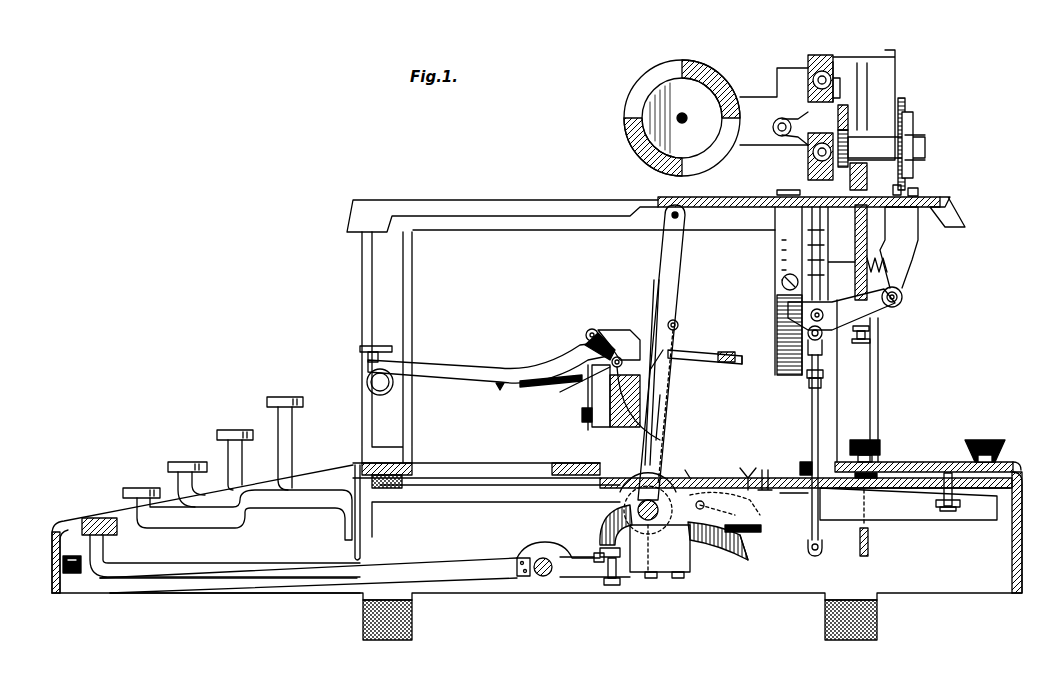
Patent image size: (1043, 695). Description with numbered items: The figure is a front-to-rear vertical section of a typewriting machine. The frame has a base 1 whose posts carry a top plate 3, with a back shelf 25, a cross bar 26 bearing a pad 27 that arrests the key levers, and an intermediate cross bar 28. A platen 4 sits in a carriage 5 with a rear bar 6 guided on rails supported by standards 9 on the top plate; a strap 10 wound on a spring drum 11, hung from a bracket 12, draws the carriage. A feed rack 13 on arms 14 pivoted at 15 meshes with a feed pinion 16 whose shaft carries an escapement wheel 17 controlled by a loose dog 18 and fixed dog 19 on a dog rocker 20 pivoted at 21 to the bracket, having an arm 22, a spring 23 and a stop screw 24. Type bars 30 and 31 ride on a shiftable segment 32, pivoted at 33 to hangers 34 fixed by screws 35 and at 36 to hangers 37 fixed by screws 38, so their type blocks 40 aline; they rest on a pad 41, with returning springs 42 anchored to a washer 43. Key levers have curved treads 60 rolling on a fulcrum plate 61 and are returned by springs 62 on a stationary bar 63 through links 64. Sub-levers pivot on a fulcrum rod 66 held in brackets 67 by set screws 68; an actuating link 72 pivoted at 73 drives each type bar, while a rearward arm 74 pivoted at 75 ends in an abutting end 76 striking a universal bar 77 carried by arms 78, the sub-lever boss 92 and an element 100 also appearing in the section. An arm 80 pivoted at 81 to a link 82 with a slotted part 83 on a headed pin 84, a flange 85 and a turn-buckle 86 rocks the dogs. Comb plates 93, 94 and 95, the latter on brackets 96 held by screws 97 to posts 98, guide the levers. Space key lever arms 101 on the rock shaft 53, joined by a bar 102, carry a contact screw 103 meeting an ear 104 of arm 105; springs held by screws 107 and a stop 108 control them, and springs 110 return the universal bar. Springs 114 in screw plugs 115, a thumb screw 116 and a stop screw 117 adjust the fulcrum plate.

The base 1 is at (1014, 550).
The top plate 3 is at (575, 200).
The platen 4 is at (686, 60).
The carriage 5 is at (757, 97).
The rear bar 6 is at (836, 88).
The standards 9 is at (895, 82).
The strap 10 is at (786, 190).
The spring drum 11 is at (775, 245).
The bracket 12 is at (855, 246).
The feed rack 13 is at (848, 110).
The arms 14 is at (795, 112).
The pivot 15 is at (773, 124).
The feed pinion 16 is at (848, 132).
The escapement wheel 17 is at (905, 102).
The loose dog 18 is at (901, 187).
The fixed dog 19 is at (918, 192).
The dog rocker 20 is at (912, 270).
The pivot 21 is at (902, 297).
The arm 22 is at (838, 348).
The spring 23 is at (873, 258).
The stop screw 24 is at (870, 333).
The back shelf 25 is at (930, 462).
The cross bar 26 is at (412, 463).
The pad 27 is at (388, 475).
The cross bar 28 is at (560, 463).
The type bars 30 is at (572, 352).
The type bars 31 is at (623, 348).
The shiftable segment 32 is at (622, 427).
The pivot 33 is at (600, 340).
The hangers 34 is at (560, 392).
The screws 35 is at (582, 418).
The pivot 36 is at (560, 385).
The hangers 37 is at (660, 440).
The screws 38 is at (599, 396).
The type blocks 40 is at (378, 346).
The pad 41 is at (393, 385).
The returning springs 42 is at (510, 386).
The washer 43 is at (588, 430).
The rock shaft 53 is at (543, 576).
The treads 60 is at (925, 500).
The fulcrum plate 61 is at (912, 488).
The returning springs 62 is at (766, 470).
The stationary bar 63 is at (806, 462).
The links 64 is at (747, 466).
The fulcrum rod 66 is at (690, 478).
The brackets 67 is at (690, 555).
The set screws 68 is at (651, 578).
The actuating link 72 is at (612, 332).
The pivot 73 is at (592, 329).
The rearwardly extending arm 74 is at (755, 510).
The pivot 75 is at (712, 508).
The abutting end 76 is at (761, 528).
The universal bar 77 is at (745, 552).
The arms 78 is at (724, 556).
The arm 80 is at (806, 555).
The pivot 81 is at (822, 545).
The link 82 is at (818, 420).
The part 83 is at (822, 330).
The headed pin 84 is at (820, 308).
The flange 85 is at (812, 250).
The turn-buckle 86 is at (807, 385).
The pivot boss 92 is at (655, 472).
The comb plate 93 is at (360, 548).
The comb plate 94 is at (864, 556).
The comb plate 95 is at (712, 352).
The bars or brackets 96 is at (740, 364).
The screws 97 is at (652, 320).
The posts 98 is at (655, 388).
The block 100 is at (95, 518).
The lever arms 101 is at (195, 577).
The transverse bar 102 is at (523, 576).
The contact screw 103 is at (610, 586).
The ear 104 is at (600, 548).
The rearwardly projecting arm 105 is at (600, 525).
The screws 107 is at (678, 578).
The stop 108 is at (72, 573).
The returning springs 110 is at (681, 508).
The springs 114 is at (877, 475).
The screw plugs 115 is at (878, 442).
The thumb screw 116 is at (982, 440).
The stop screw 117 is at (950, 511).